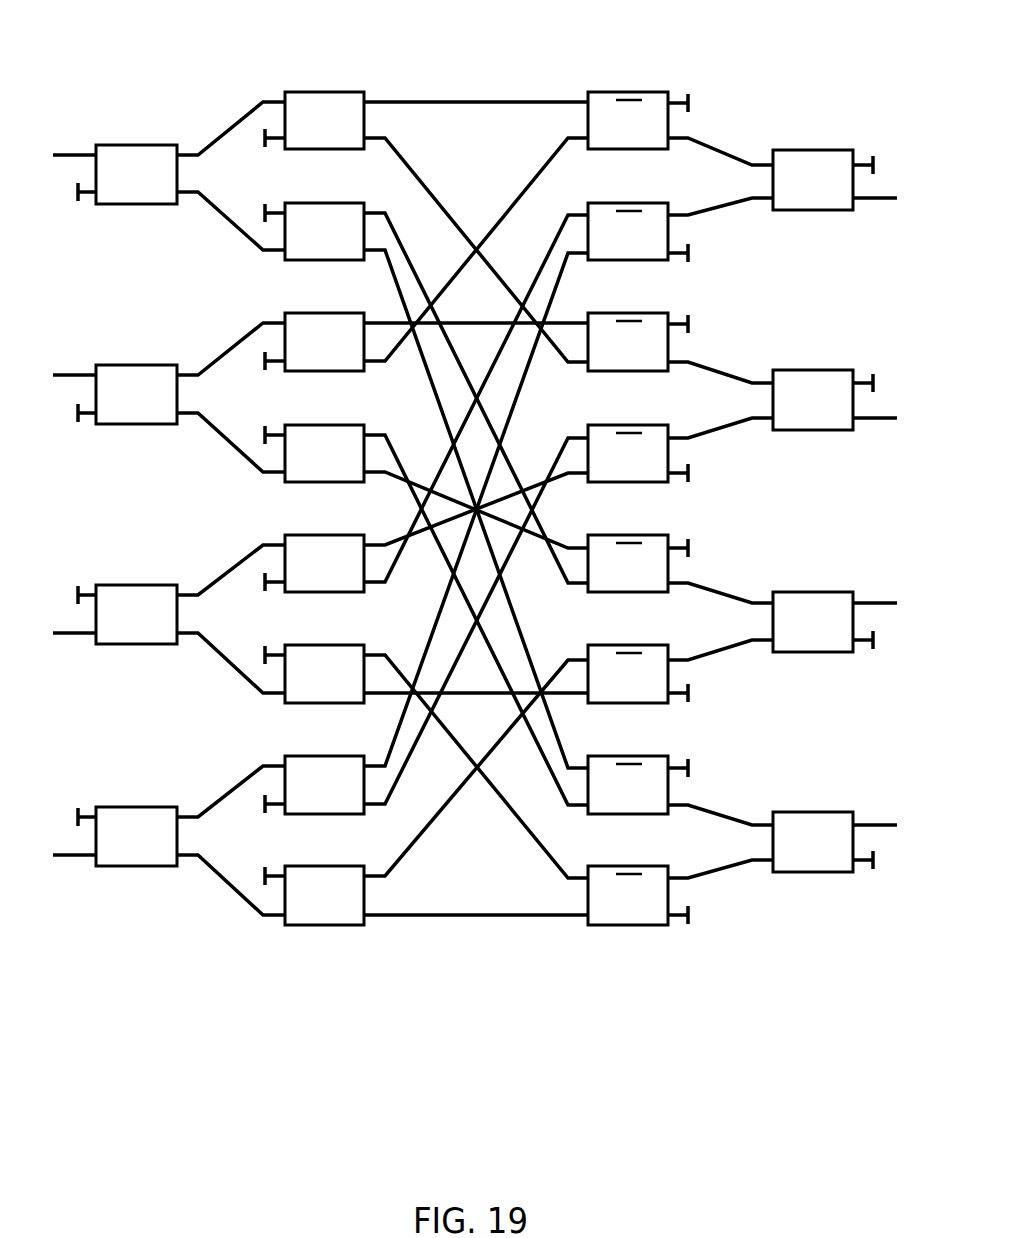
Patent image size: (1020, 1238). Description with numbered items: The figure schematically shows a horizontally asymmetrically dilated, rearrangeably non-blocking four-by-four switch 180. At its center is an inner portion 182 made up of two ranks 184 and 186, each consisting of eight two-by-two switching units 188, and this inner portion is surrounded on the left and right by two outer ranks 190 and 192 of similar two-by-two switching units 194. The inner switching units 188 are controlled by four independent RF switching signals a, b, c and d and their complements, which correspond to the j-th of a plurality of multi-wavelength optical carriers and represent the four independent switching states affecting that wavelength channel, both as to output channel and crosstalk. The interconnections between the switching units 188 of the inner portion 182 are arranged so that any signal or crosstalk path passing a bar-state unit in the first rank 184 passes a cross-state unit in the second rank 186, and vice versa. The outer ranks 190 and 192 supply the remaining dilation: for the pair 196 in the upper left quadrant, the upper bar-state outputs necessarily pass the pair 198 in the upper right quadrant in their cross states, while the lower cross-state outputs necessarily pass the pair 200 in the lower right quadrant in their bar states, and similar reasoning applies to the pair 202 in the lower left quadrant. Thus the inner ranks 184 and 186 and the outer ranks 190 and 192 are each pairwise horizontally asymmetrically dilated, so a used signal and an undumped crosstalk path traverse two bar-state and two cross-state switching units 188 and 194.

The dilated 4×4 switch 180 is at (475, 562).
The inner portion 182 is at (519, 554).
The first rank 184 is at (316, 938).
The second rank 186 is at (652, 593).
The 2×2 switching unit 188 is at (322, 92).
The outer rank 190 is at (162, 529).
The outer rank 192 is at (842, 607).
The switching unit 194 is at (133, 146).
The pair 196 is at (135, 245).
The pair 198 is at (813, 255).
The pair 200 is at (813, 700).
The pair 202 is at (135, 688).